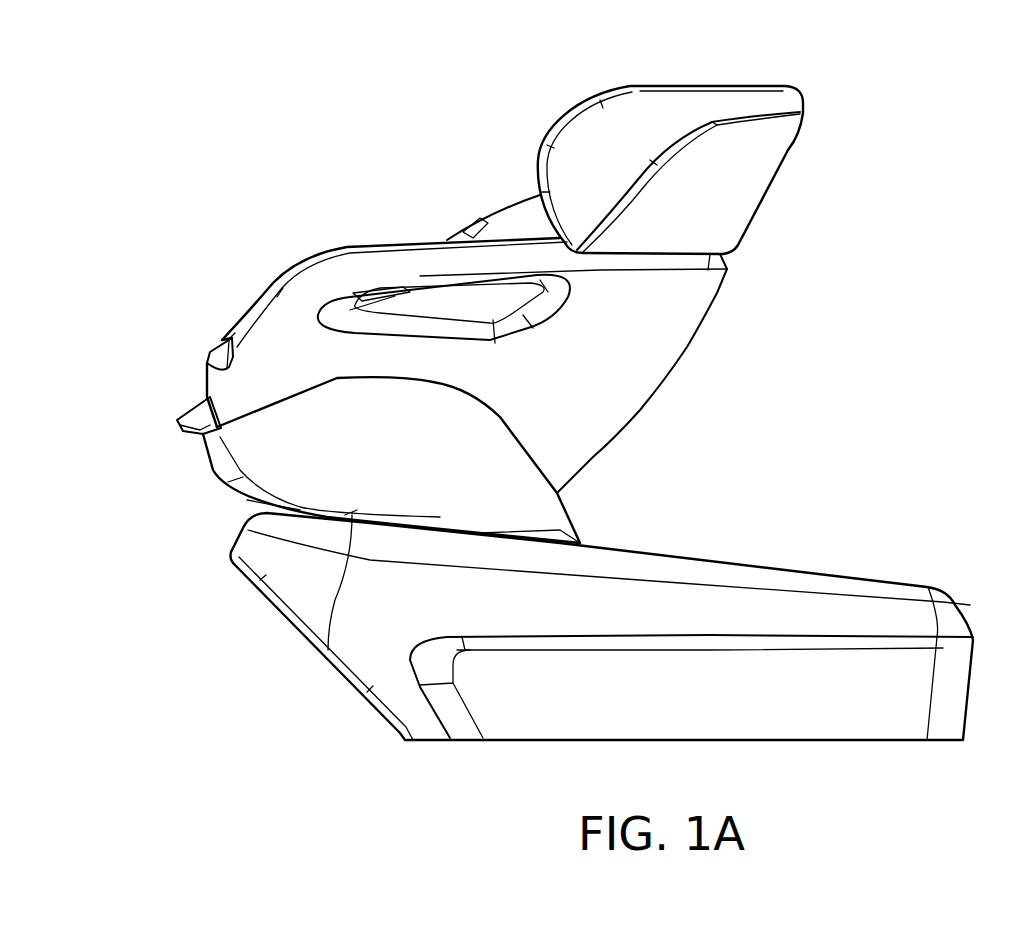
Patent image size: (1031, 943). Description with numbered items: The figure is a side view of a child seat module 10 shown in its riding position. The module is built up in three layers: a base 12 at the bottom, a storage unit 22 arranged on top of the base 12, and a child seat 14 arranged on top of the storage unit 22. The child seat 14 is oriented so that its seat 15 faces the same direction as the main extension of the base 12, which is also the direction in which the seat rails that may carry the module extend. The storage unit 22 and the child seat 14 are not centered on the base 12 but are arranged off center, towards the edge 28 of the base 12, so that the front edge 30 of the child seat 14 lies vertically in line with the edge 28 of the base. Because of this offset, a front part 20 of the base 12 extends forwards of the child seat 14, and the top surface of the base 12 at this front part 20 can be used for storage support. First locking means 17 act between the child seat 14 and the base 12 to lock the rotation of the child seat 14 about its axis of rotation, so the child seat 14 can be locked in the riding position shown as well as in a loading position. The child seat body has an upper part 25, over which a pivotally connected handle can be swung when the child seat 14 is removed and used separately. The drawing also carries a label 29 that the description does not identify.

The child seat module 10 is at (867, 175).
The upper part of the child seat body 25 is at (852, 83).
The seat 15 is at (425, 200).
The child seat 14 is at (607, 328).
The front edge of the child seat 30 is at (207, 372).
The storage unit 22 is at (317, 435).
The first locking means 17 is at (237, 507).
The front part of the base 20 is at (908, 517).
The base 12 is at (705, 612).
The edge of the base 28 is at (240, 532).
The base lower panel 29 is at (400, 625).